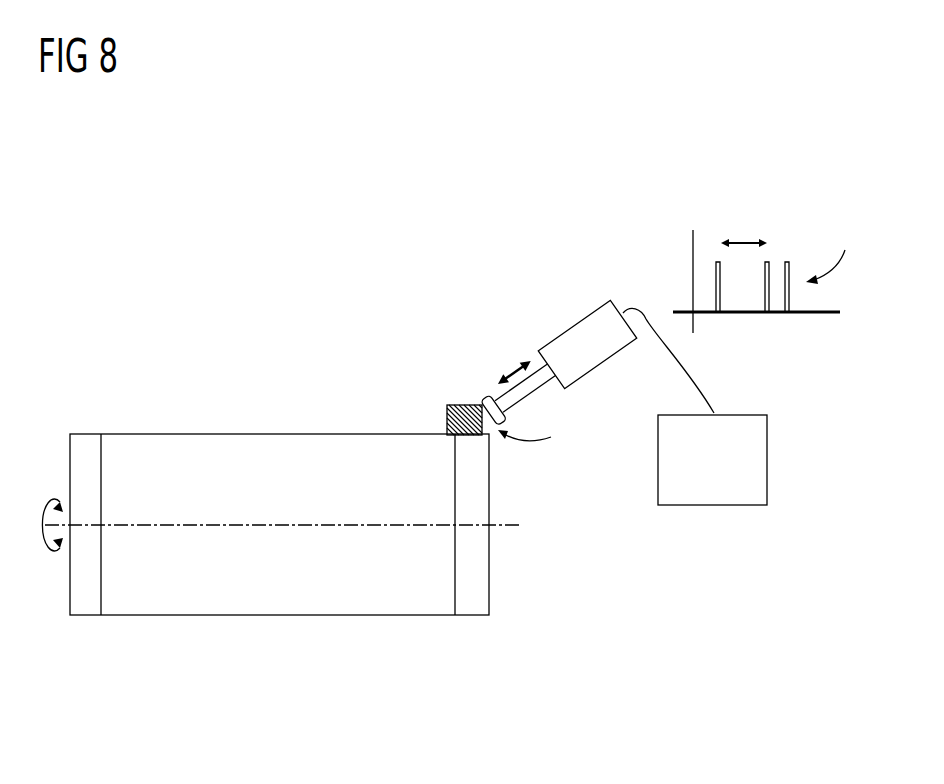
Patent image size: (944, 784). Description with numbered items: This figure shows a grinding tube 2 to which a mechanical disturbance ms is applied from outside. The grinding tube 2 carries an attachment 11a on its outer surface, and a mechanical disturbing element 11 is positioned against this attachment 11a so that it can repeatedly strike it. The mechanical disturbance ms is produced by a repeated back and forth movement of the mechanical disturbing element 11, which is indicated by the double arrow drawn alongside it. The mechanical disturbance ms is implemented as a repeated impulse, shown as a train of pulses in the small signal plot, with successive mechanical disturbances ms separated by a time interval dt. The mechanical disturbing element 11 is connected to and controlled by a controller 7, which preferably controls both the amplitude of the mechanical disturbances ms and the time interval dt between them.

The grinding tube 2 is at (211, 410).
The mechanical disturbing element 11 is at (571, 316).
The attachment 11a is at (458, 403).
The controller 7 is at (768, 458).
The mechanical disturbance ms is at (680, 333).
The time interval dt is at (744, 230).